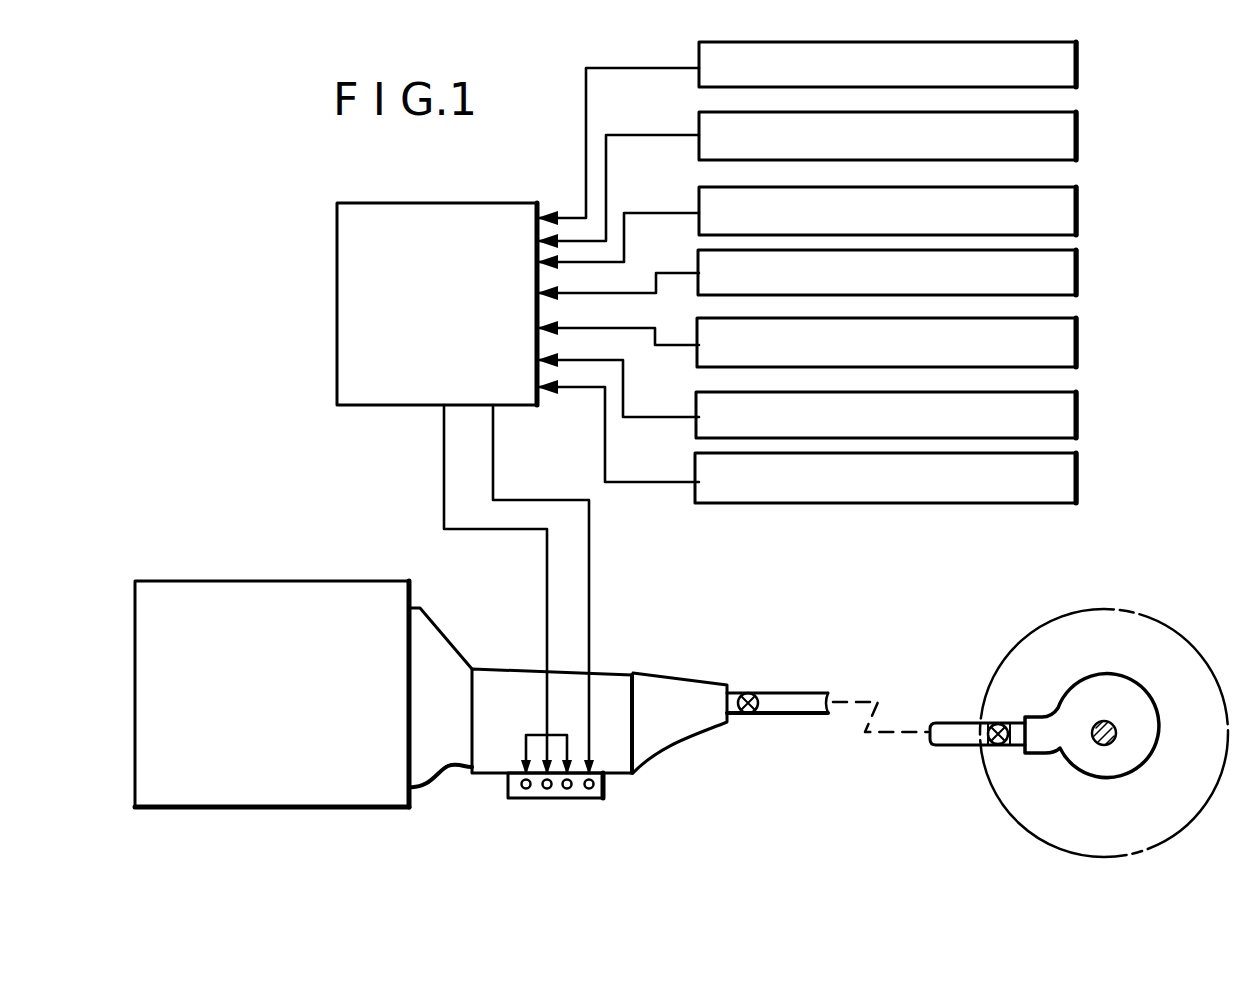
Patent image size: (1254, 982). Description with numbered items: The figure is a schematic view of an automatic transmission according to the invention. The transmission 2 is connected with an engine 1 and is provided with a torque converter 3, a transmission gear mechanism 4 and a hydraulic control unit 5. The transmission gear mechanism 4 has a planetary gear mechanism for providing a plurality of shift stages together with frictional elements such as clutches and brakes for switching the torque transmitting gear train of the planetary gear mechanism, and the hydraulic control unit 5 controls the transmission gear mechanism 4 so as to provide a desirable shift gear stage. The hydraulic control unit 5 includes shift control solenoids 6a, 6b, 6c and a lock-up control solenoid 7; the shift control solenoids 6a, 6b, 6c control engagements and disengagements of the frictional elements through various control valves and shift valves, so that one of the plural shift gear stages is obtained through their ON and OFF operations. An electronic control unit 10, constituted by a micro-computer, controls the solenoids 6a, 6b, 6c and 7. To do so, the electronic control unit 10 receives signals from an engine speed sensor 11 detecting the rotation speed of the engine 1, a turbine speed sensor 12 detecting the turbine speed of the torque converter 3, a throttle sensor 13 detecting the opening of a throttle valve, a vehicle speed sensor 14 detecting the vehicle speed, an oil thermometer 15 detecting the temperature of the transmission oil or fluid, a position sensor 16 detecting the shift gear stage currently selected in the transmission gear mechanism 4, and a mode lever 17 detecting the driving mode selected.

The engine 1 is at (248, 581).
The transmission 2 is at (645, 660).
The torque converter 3 is at (435, 652).
The transmission gear mechanism 4 is at (602, 690).
The hydraulic control unit 5 is at (607, 785).
The shift control solenoid 6a is at (523, 797).
The shift control solenoid 6b is at (542, 797).
The shift control solenoid 6c is at (567, 797).
The lock-up control solenoid 7 is at (592, 797).
The electronic control unit 10 is at (495, 203).
The engine speed sensor 11 is at (1077, 64).
The turbine speed sensor 12 is at (1077, 488).
The throttle sensor 13 is at (1077, 132).
The vehicle speed sensor 14 is at (1077, 215).
The oil thermometer 15 is at (1077, 280).
The position sensor 16 is at (1077, 348).
The mode lever 17 is at (1077, 418).